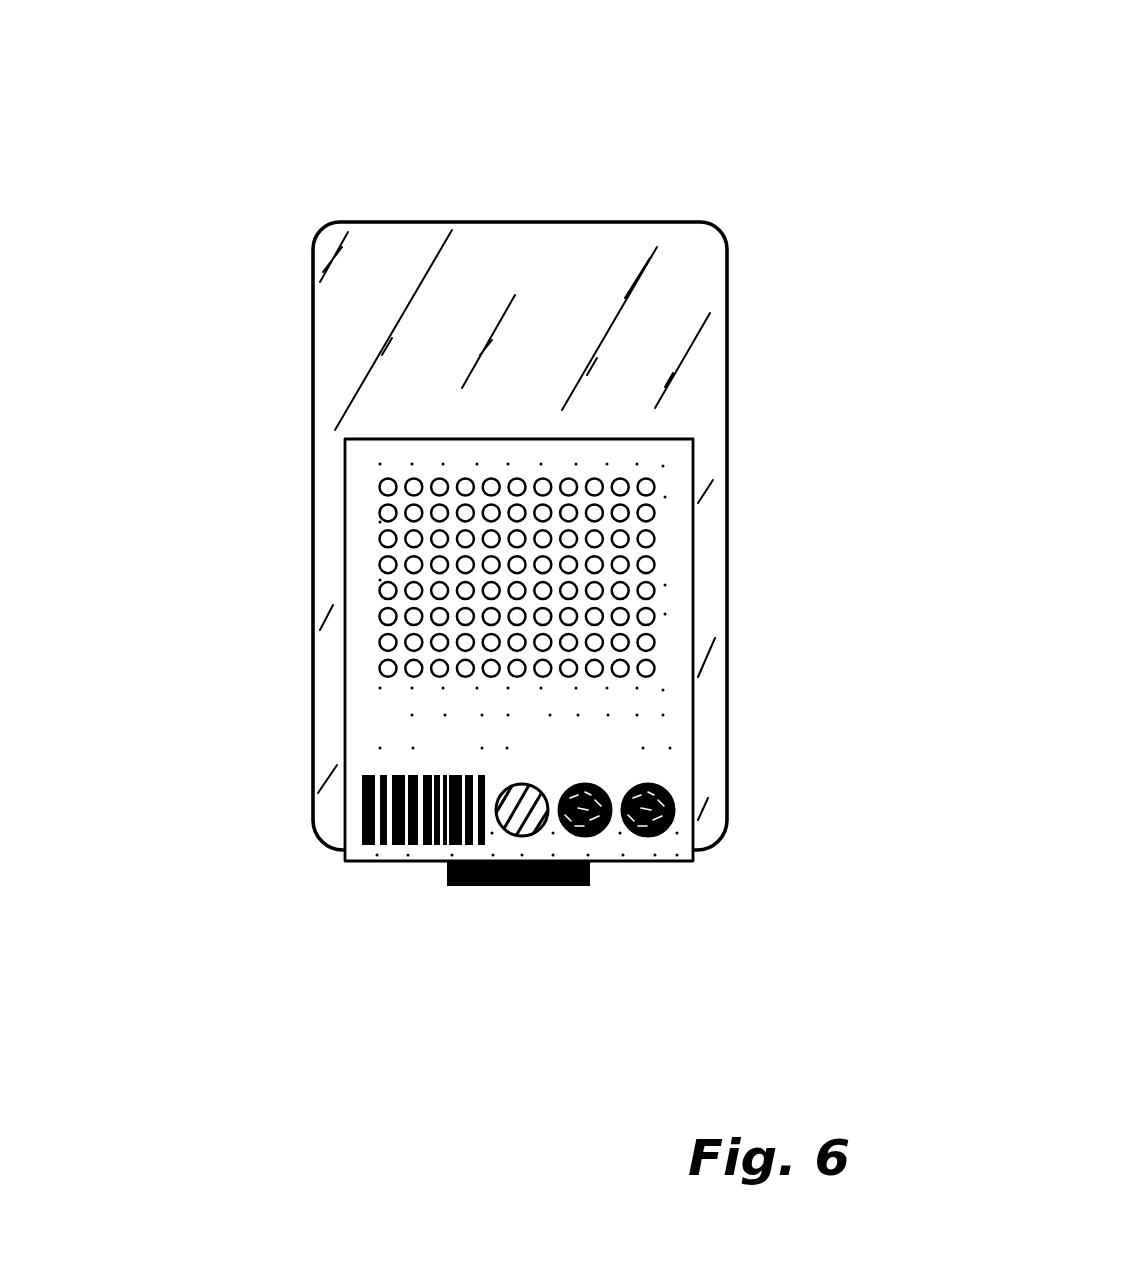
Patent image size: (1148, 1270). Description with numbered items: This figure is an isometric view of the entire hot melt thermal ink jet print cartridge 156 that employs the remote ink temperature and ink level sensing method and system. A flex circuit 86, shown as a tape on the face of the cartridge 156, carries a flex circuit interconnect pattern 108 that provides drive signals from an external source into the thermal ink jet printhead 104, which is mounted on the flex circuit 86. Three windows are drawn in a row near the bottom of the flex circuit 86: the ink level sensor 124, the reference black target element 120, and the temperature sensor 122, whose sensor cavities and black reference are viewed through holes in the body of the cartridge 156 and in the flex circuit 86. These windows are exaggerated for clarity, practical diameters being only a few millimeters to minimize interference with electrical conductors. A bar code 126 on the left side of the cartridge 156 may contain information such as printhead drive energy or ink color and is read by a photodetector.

The hot melt thermal ink jet print cartridge 156 is at (352, 40).
The flex circuit 86 is at (847, 172).
The flex circuit interconnect pattern 108 is at (655, 565).
The ink level sensor 124 is at (242, 640).
The reference black target element 120 is at (592, 784).
The temperature sensor 122 is at (676, 811).
The bar code 126 is at (341, 824).
The thermal ink jet printhead 104 is at (425, 891).